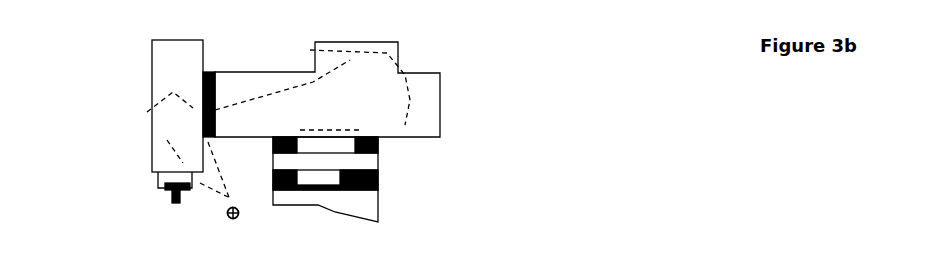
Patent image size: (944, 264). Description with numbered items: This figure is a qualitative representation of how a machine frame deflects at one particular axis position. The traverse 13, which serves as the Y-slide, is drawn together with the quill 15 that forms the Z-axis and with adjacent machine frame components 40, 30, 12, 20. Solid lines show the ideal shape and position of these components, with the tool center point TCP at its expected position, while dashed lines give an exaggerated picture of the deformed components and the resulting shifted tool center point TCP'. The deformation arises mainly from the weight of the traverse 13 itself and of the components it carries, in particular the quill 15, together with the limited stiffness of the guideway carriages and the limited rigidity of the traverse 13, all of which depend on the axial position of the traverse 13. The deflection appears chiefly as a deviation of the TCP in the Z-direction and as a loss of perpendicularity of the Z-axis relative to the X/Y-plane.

The tool holder 40 is at (194, 79).
The quill 15 is at (163, 122).
The traverse 13 is at (390, 102).
The upper clamping bar 30 is at (395, 158).
The middle element 12 is at (363, 160).
The lower element 20 is at (396, 191).
The tool center point TCP is at (58, 171).
The shifted tool center point TCP' is at (140, 223).